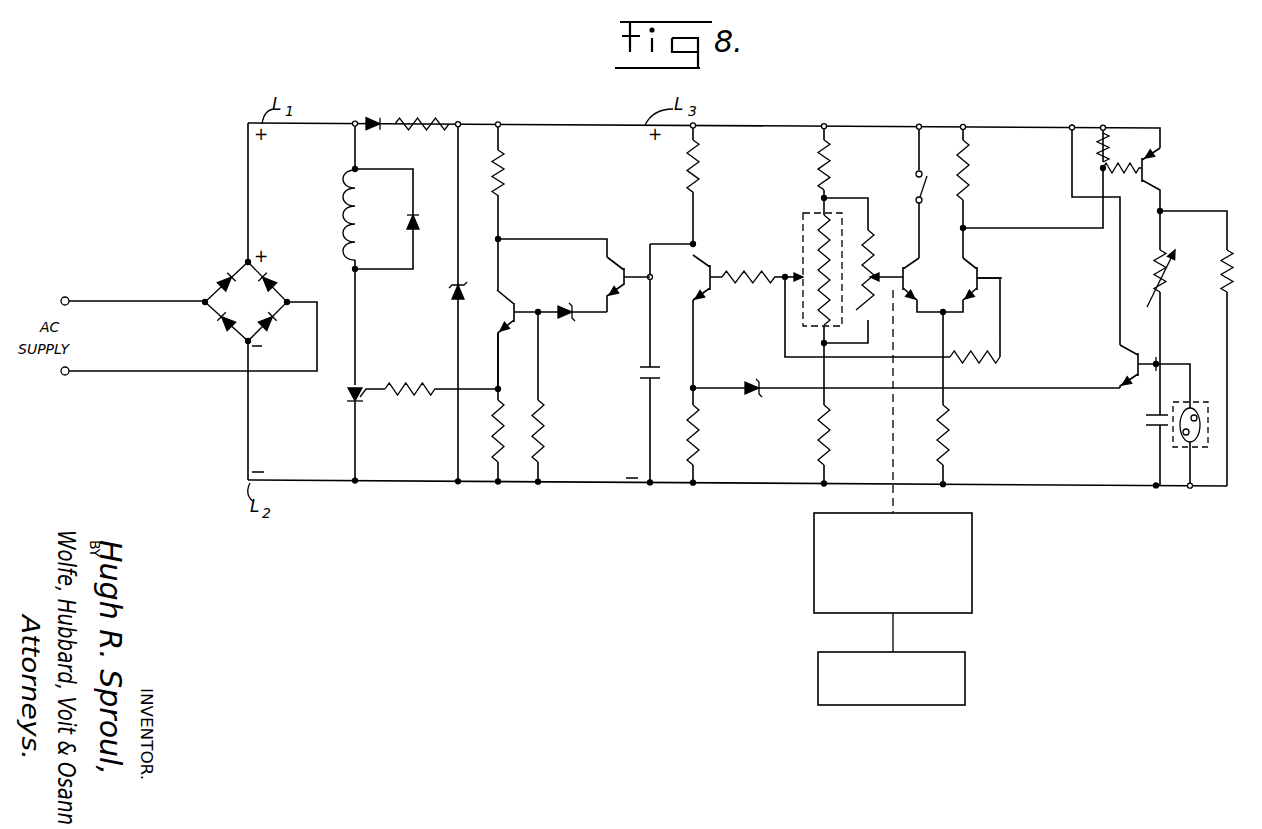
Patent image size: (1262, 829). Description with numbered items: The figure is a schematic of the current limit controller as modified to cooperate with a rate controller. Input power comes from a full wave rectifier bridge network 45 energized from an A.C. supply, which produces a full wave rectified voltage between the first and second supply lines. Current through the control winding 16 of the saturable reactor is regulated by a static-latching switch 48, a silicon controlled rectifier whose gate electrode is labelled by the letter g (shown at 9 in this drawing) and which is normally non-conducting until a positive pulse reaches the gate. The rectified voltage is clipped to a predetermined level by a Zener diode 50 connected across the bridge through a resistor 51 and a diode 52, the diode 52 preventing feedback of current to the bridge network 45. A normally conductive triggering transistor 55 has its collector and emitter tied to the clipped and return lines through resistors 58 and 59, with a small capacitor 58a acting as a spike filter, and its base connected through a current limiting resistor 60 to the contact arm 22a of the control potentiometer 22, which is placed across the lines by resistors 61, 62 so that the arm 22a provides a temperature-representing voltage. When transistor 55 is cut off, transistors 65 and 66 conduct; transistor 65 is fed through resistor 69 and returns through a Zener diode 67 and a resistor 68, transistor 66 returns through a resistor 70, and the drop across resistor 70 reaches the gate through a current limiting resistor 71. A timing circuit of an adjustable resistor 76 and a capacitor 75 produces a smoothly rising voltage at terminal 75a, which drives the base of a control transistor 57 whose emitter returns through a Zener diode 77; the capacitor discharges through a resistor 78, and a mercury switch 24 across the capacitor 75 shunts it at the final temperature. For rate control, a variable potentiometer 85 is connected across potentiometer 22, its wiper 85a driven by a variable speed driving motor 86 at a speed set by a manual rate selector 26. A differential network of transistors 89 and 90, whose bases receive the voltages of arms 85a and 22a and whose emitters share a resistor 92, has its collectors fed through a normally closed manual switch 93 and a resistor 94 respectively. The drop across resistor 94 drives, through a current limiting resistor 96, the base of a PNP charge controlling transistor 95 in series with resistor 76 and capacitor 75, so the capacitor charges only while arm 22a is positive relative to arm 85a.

The full wave rectifier bridge network 45 is at (246, 302).
The control winding 16 is at (344, 217).
The diode 52 is at (372, 120).
The resistor 51 is at (420, 120).
The Zener diode 50 is at (454, 302).
The static-latching switch 48 is at (360, 404).
The gate lead 9 is at (372, 383).
The current limiting resistor 71 is at (432, 386).
The resistor 69 is at (505, 192).
The transistor 66 is at (506, 314).
The resistor 70 is at (495, 445).
The resistor 68 is at (545, 444).
The Zener diode 67 is at (571, 322).
The transistor 65 is at (621, 292).
The capacitor 58a is at (640, 377).
The resistor 58 is at (699, 186).
The triggering transistor 55 is at (708, 291).
The current limiting resistor 60 is at (742, 292).
The resistor 59 is at (697, 447).
The Zener diode 77 is at (759, 380).
The control potentiometer 22 is at (802, 216).
The contact arm 22a is at (795, 275).
The resistor 61 is at (830, 176).
The resistor 62 is at (820, 443).
The variable potentiometer 85 is at (869, 232).
The wiper 85a is at (876, 268).
The manual switch 93 is at (922, 186).
The transistor 89 is at (906, 271).
The transistor 90 is at (982, 289).
The resistor 92 is at (948, 445).
The resistor 94 is at (968, 193).
The current limiting resistor 96 is at (1118, 163).
The charge controlling transistor 95 is at (1158, 176).
The adjustable resistor 76 is at (1166, 294).
The resistor 78 is at (1224, 307).
The control transistor 57 is at (1136, 363).
The terminal 75a is at (1165, 363).
The capacitor 75 is at (1152, 422).
The mercury switch 24 is at (1208, 447).
The variable speed driving motor 86 is at (972, 577).
The rate selector 26 is at (965, 685).